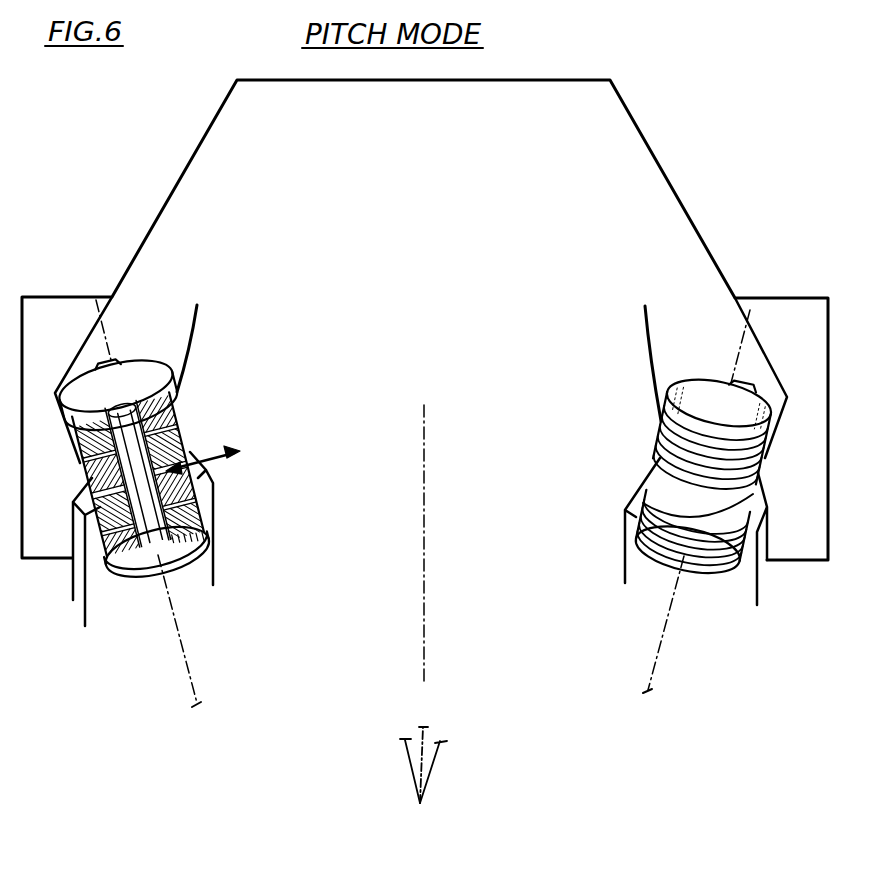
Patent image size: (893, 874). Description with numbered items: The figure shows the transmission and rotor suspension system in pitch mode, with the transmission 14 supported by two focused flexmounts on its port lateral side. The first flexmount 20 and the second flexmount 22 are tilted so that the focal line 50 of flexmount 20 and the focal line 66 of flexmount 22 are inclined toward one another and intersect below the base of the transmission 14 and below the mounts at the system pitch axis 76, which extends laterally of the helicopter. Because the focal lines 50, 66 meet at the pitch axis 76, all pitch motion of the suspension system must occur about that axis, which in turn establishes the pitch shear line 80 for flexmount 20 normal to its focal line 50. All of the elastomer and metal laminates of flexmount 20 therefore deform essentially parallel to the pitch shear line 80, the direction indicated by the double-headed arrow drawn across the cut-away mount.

The transmission 14 is at (442, 234).
The flexmount 20 is at (179, 406).
The flexmount 22 is at (663, 442).
The focal line 50 is at (186, 645).
The focal line 66 is at (663, 630).
The pitch axis 76 is at (419, 803).
The pitch shear line 80 is at (206, 460).